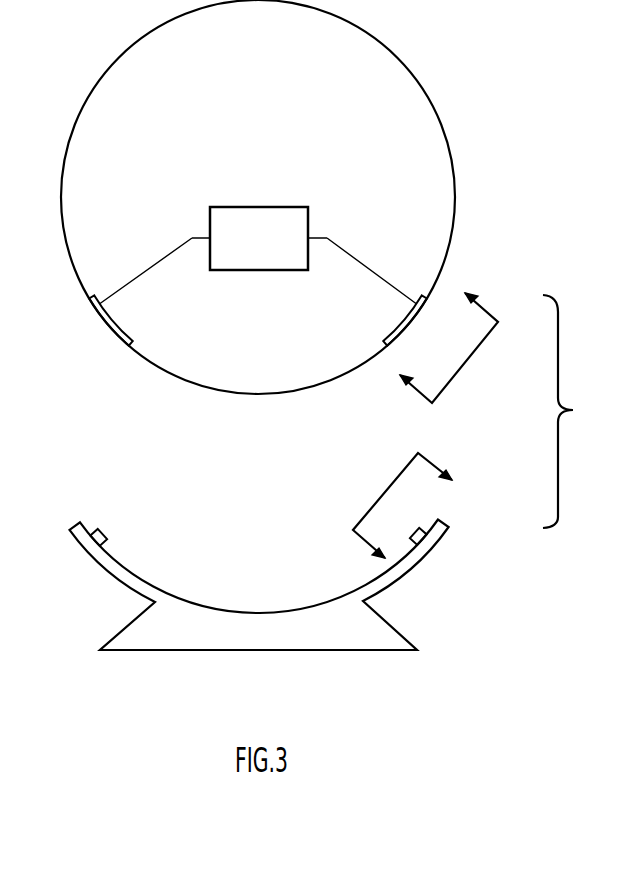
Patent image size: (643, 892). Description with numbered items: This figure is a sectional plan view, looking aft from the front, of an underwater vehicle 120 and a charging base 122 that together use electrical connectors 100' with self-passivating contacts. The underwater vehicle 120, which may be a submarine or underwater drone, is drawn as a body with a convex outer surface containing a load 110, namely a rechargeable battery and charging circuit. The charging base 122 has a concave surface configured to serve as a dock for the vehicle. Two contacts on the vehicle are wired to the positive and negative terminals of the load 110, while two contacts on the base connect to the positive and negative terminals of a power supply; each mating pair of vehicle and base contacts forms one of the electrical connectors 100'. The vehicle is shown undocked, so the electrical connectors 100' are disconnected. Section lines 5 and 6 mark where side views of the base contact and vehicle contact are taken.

The underwater vehicle 120 is at (441, 121).
The load 110 is at (273, 246).
The charging base 122 is at (345, 650).
The electrical connectors 100' is at (577, 411).
The section line 6- 6 is at (443, 343).
The section line 5- 5 is at (405, 516).